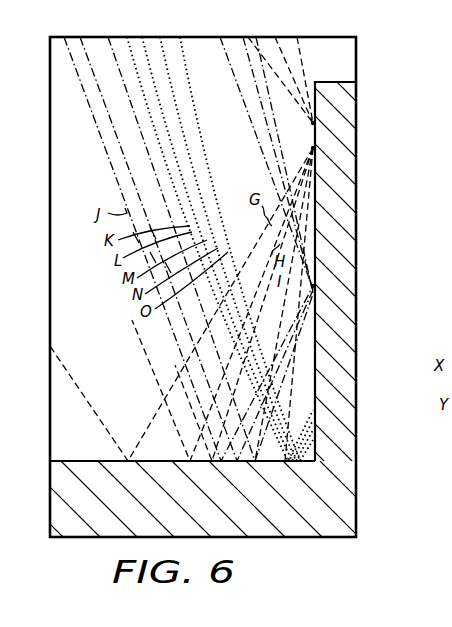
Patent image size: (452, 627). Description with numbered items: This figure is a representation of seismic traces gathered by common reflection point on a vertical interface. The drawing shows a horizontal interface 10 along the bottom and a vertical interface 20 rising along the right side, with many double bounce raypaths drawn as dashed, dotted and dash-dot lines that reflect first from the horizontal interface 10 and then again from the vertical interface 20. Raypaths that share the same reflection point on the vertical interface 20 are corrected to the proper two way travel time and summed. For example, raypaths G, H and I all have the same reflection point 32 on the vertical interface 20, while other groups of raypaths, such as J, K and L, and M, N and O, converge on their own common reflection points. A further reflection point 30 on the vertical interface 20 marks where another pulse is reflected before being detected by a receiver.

The horizontal interface 10 is at (75, 461).
The vertical interface 20 is at (313, 217).
The reflection point 30 is at (312, 134).
The reflection point 32 is at (314, 278).